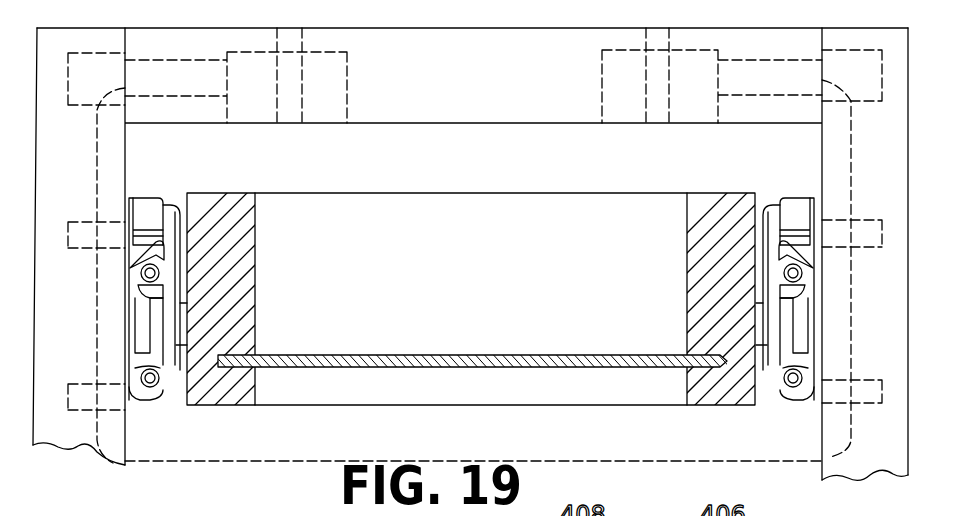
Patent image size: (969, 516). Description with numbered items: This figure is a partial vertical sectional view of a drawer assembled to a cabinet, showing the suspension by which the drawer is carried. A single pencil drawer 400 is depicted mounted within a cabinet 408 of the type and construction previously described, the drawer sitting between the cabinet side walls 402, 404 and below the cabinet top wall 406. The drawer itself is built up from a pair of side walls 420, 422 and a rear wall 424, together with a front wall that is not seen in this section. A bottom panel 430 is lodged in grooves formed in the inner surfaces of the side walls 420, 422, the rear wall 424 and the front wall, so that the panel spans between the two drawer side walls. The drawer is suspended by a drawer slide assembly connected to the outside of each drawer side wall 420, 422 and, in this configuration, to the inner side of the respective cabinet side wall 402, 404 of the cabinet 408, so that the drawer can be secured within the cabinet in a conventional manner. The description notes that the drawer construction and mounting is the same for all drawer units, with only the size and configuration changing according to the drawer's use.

The pencil drawer 400 is at (460, 318).
The side wall 402 is at (862, 463).
The side wall 404 is at (72, 437).
The top wall 406 is at (504, 28).
The cabinet 408 is at (712, 28).
The side wall 420 is at (725, 215).
The side wall 422 is at (234, 214).
The rear wall 424 is at (500, 316).
The bottom panel 430 is at (580, 367).